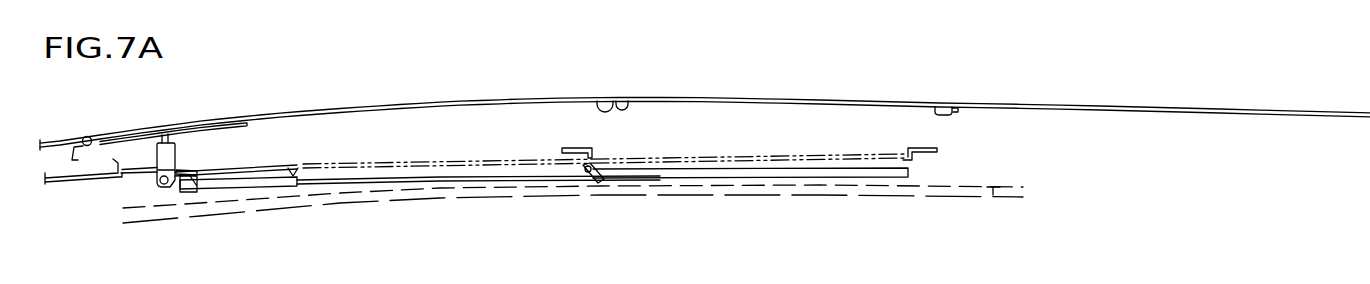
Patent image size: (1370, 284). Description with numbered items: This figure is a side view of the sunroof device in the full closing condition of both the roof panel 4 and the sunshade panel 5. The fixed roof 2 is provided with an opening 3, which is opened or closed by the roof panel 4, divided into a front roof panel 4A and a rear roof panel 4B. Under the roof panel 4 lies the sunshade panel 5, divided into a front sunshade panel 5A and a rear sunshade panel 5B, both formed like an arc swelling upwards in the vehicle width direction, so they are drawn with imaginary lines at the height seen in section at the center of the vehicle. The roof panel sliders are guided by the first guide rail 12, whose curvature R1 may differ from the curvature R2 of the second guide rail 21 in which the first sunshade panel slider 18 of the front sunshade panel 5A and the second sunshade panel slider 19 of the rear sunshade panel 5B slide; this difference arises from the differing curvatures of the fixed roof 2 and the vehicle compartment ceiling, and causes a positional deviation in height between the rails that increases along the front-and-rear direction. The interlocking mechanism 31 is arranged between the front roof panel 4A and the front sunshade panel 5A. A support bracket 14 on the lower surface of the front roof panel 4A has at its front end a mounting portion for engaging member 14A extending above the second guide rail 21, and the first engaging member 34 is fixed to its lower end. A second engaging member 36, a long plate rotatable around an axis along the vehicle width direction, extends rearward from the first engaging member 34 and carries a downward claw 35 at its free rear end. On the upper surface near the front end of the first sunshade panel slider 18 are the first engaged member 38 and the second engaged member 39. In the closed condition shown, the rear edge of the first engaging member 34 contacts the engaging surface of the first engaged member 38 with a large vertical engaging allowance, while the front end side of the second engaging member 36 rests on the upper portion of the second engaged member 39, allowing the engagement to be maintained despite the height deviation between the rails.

The fixed roof 2 is at (63, 138).
The opening 3 is at (83, 137).
The roof panel 4 is at (706, 80).
The front roof panel 4A is at (455, 102).
The rear roof panel 4B is at (838, 99).
The sunshade panel 5 is at (620, 142).
The front sunshade panel 5A is at (417, 160).
The rear sunshade panel 5B is at (700, 157).
The first guide rail 12 is at (910, 198).
The support bracket 14 is at (240, 116).
The mounting portion for engaging member 14A is at (165, 131).
The first sunshade panel slider 18 is at (513, 179).
The second sunshade panel slider 19 is at (752, 174).
The second guide rail 21 is at (993, 198).
The interlocking mechanism 31 is at (125, 193).
The first engaging member 34 is at (157, 154).
The claw 35 is at (293, 181).
The second engaging member 36 is at (257, 164).
The first engaged member 38 is at (184, 168).
The second engaged member 39 is at (184, 193).
The curvature of the first guide rail R1 is at (375, 208).
The curvature of the second guide rail R2 is at (399, 193).